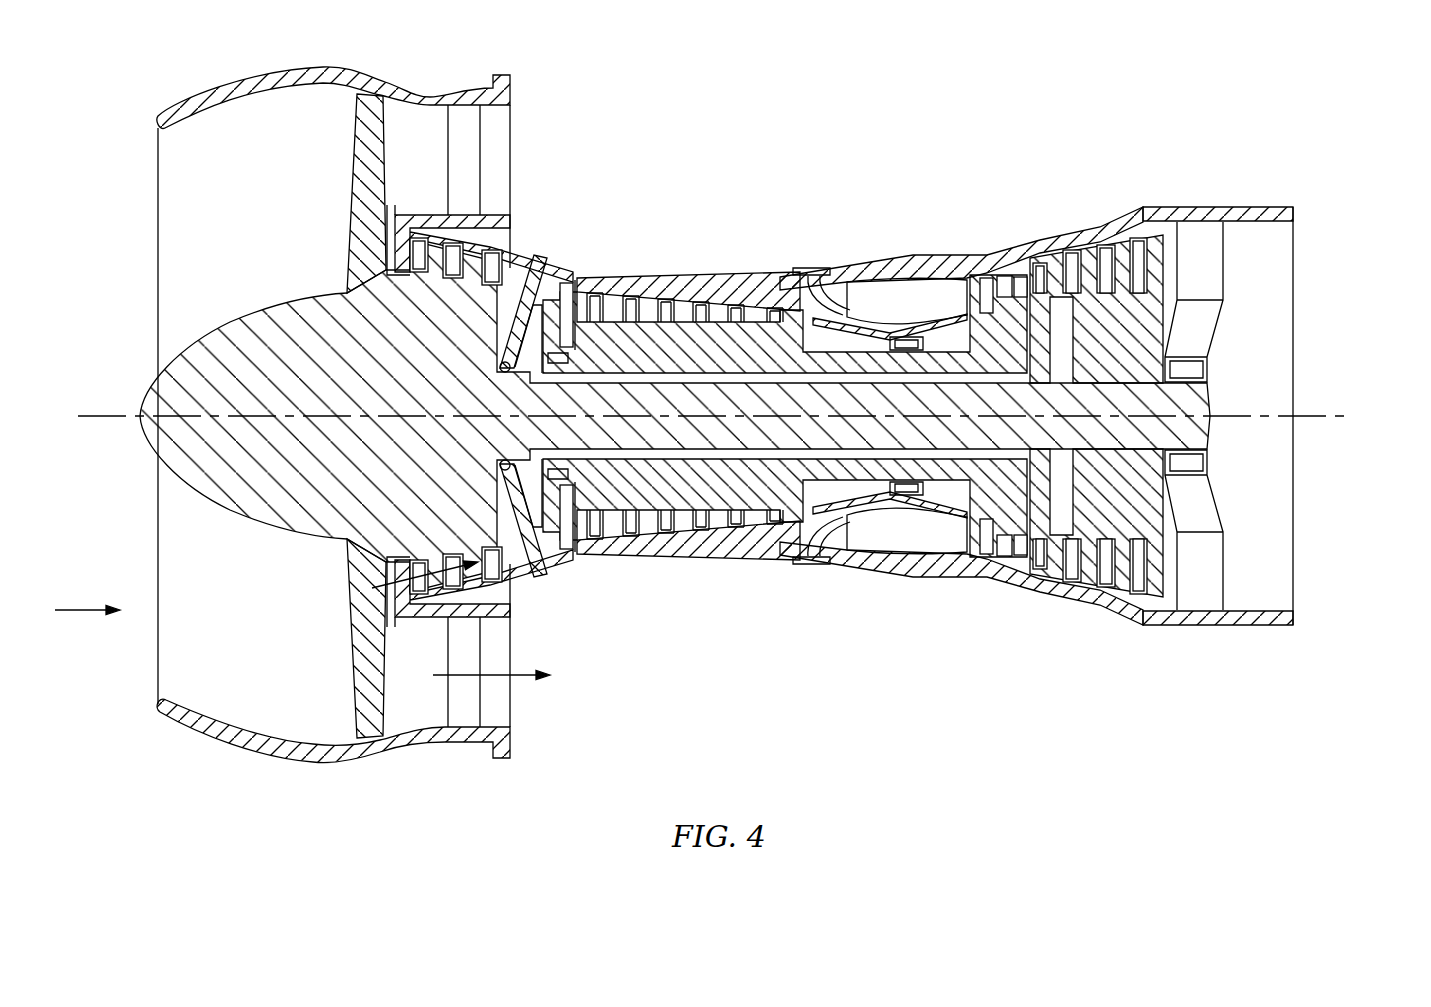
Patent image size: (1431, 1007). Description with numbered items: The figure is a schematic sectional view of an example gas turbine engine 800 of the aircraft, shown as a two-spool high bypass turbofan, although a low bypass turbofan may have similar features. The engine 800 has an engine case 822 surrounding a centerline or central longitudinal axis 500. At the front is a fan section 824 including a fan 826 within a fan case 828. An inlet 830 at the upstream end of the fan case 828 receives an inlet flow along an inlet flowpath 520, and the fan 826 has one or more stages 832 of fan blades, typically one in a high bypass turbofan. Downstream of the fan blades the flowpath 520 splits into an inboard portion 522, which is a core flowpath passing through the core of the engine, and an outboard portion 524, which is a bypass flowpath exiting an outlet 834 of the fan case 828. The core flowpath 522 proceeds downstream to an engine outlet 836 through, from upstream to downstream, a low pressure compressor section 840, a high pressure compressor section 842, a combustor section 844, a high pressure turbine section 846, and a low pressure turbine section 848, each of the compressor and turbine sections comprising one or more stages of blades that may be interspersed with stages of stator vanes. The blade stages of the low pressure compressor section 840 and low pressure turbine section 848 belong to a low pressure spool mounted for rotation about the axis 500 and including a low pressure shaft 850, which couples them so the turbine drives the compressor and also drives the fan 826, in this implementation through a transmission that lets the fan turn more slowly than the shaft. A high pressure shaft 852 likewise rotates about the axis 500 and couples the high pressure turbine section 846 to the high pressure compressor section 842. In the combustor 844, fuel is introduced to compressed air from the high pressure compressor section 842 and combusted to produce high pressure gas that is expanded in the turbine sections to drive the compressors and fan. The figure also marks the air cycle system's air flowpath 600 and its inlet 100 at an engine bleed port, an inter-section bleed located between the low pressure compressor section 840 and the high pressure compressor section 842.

The inlet 100 is at (563, 282).
The central longitudinal axis 500 is at (98, 412).
The inlet flowpath 520 is at (78, 610).
The core flowpath 522 is at (513, 588).
The bypass flowpath 524 is at (497, 676).
The air flowpath 600 is at (628, 258).
The gas turbine engine 800 is at (863, 110).
The engine case 822 is at (757, 573).
The fan section 824 is at (327, 788).
The fan 826 is at (333, 650).
The fan case 828 is at (388, 748).
The inlet 830 is at (138, 680).
The stages of fan blades 832 is at (370, 603).
The outlet 834 is at (523, 172).
The engine outlet 836 is at (1305, 570).
The low pressure compressor section 840 is at (478, 260).
The high pressure compressor section 842 is at (685, 310).
The combustor section 844 is at (903, 300).
The high pressure turbine section 846 is at (987, 305).
The low pressure turbine section 848 is at (1130, 262).
The low pressure shaft 850 is at (905, 437).
The high pressure shaft 852 is at (957, 470).